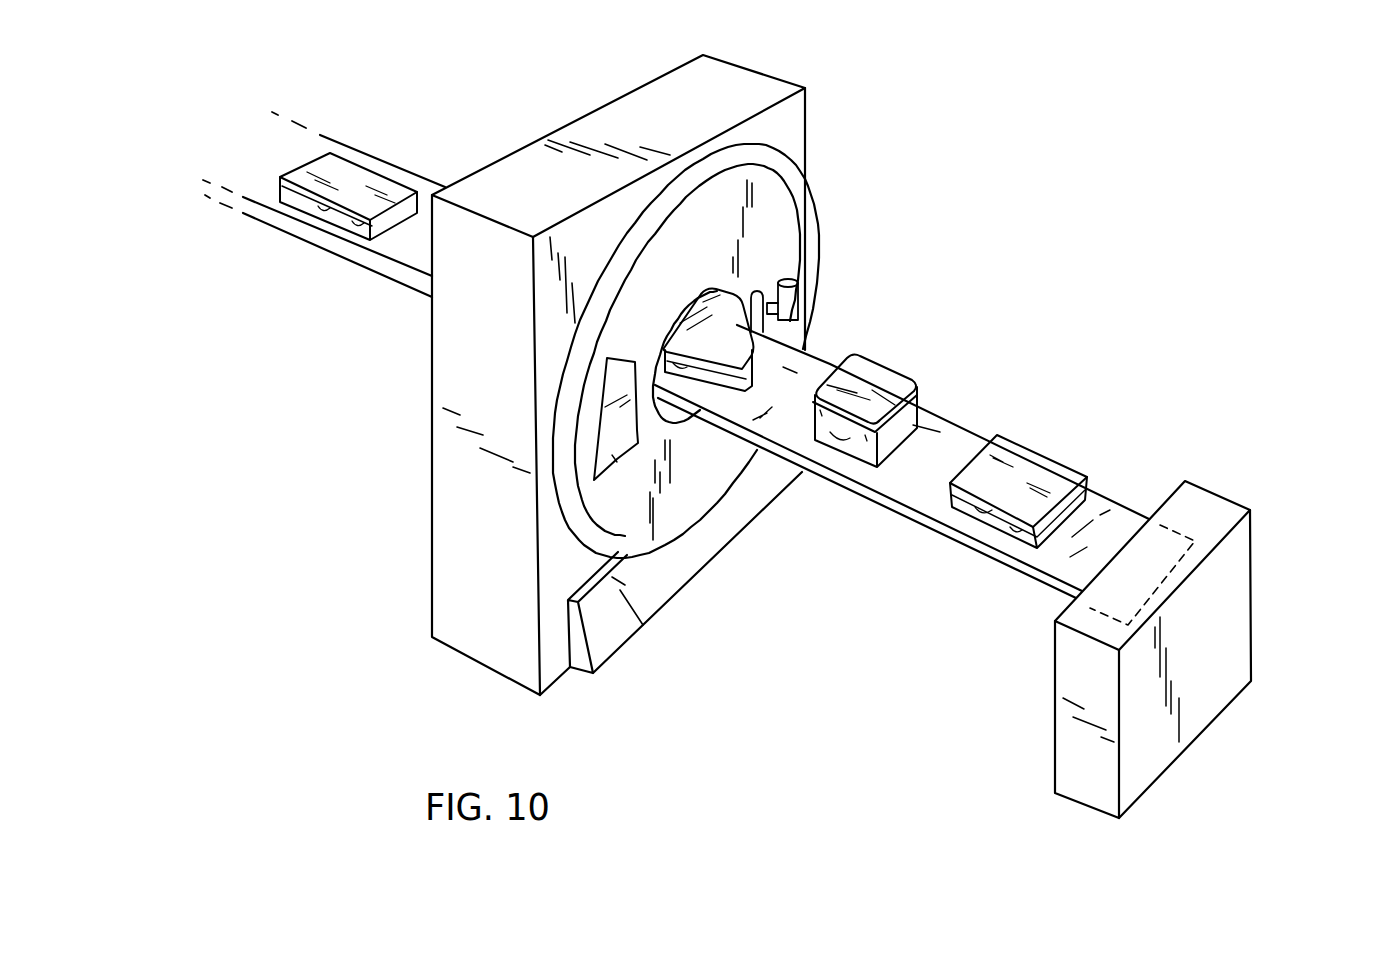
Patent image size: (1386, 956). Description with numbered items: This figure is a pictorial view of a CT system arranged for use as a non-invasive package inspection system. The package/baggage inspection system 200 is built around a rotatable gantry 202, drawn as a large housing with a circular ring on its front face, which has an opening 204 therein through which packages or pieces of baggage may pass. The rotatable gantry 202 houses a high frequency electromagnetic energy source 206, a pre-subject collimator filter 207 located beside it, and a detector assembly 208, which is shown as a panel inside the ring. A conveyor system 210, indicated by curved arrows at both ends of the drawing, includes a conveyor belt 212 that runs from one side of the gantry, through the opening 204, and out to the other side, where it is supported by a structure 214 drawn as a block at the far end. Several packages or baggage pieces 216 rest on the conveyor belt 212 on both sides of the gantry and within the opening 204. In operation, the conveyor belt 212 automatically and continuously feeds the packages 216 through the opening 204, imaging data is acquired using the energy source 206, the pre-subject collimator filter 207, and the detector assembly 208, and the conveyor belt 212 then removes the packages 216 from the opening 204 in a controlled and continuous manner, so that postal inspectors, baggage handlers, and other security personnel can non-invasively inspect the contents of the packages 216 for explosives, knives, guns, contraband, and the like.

The package/baggage inspection system 200 is at (1054, 241).
The rotatable gantry 202 is at (803, 231).
The opening 204 is at (737, 288).
The high frequency electromagnetic energy source 206 is at (800, 304).
The pre-subject collimator filter 207 is at (765, 330).
The detector assembly 208 is at (617, 460).
The conveyor system 210 is at (200, 227).
The conveyor belt 212 is at (385, 253).
The structure 214 is at (1239, 611).
The packages or baggage pieces 216 is at (363, 178).